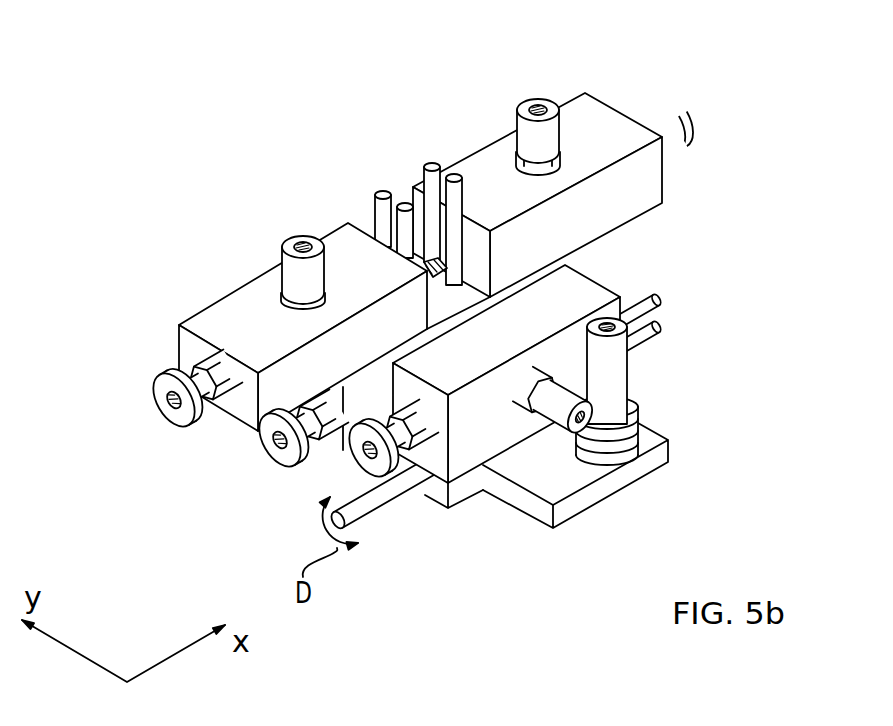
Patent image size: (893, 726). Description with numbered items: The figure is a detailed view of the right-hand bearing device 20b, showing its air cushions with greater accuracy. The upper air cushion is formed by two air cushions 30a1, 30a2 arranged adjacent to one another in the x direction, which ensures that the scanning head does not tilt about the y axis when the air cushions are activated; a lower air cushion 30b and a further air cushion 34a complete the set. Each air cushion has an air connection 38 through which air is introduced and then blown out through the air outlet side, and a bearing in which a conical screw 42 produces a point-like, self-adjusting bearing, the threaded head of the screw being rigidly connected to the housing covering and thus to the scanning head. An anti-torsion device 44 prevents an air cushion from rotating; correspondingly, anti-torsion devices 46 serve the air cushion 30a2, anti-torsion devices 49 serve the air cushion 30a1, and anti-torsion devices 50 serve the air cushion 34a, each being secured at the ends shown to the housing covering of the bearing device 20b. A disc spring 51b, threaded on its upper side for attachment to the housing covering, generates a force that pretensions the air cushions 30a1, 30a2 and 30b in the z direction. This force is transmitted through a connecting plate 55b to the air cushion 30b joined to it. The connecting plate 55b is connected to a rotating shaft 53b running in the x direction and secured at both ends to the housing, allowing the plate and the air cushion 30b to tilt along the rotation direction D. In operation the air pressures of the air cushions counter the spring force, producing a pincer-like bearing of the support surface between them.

The right-hand bearing device 20b is at (600, 53).
The air cushion 30a1 is at (215, 316).
The air cushion 30a2 is at (668, 183).
The air cushion 30b is at (337, 447).
The air cushion 34a is at (588, 278).
The air connection 38 is at (672, 100).
The conical screw 42 is at (517, 123).
The anti-torsion device 44 is at (428, 268).
The anti-torsion devices 46 is at (447, 177).
The anti-torsion devices 49 is at (407, 205).
The anti-torsion devices 50 is at (660, 364).
The disc spring 51b is at (622, 394).
The rotating shaft 53b is at (370, 507).
The connecting plate 55b is at (576, 512).